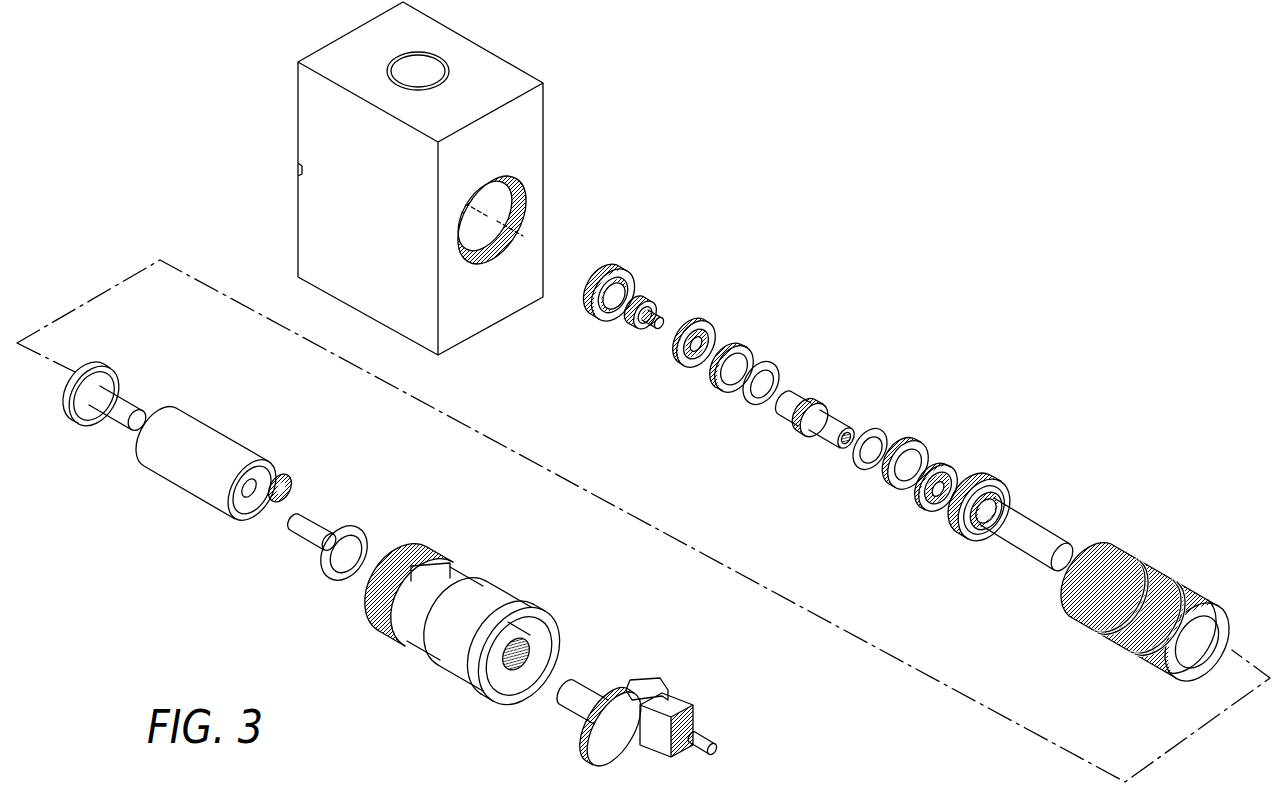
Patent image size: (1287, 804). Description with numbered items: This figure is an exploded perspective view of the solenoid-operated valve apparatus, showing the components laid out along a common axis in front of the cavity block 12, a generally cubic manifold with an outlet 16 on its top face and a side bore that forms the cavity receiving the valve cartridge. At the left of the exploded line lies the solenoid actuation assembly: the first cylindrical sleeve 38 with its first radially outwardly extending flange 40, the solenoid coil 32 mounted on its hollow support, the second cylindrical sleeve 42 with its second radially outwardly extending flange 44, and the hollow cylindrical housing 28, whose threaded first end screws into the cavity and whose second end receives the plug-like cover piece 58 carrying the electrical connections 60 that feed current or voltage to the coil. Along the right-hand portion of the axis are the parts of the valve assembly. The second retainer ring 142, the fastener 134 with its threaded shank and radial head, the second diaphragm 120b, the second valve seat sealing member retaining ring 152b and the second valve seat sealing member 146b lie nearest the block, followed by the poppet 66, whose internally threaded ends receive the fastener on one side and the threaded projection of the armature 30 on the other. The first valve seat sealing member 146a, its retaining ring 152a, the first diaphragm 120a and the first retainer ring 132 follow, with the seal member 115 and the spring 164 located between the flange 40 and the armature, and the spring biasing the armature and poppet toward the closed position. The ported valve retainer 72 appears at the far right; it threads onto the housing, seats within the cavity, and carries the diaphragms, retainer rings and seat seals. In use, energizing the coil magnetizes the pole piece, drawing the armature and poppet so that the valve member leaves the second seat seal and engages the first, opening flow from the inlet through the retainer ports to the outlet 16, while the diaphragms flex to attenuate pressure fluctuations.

The cavity block 12 is at (500, 93).
The outlet 16 is at (423, 68).
The housing 28 is at (477, 600).
The armature 30 is at (1048, 545).
The solenoid coil 32 is at (200, 465).
The first cylindrical sleeve 38 is at (130, 403).
The first radially outwardly extending flange 40 is at (78, 417).
The second cylindrical sleeve 42 is at (325, 538).
The second radially outwardly extending flange 44 is at (360, 527).
The cover piece 58 is at (633, 748).
The electrical connections 60 is at (707, 740).
The poppet 66 is at (830, 397).
The valve retainer 72 is at (1183, 588).
The seal member 115 is at (963, 543).
The first diaphragm 120a is at (927, 512).
The second diaphragm 120b is at (672, 355).
The first retainer ring 132 is at (990, 490).
The fastener 134 is at (657, 303).
The second retainer ring 142 is at (610, 257).
The first valve seat sealing member 146a is at (850, 458).
The second valve seat sealing member 146b is at (777, 373).
The first valve seat sealing member retaining ring 152a is at (907, 435).
The second valve seat sealing member retaining ring 152b is at (731, 350).
The spring 164 is at (1007, 493).